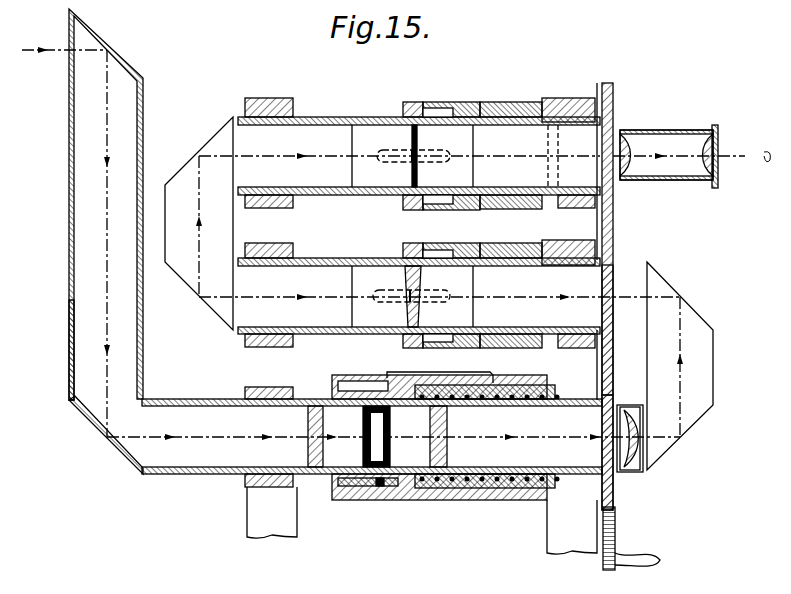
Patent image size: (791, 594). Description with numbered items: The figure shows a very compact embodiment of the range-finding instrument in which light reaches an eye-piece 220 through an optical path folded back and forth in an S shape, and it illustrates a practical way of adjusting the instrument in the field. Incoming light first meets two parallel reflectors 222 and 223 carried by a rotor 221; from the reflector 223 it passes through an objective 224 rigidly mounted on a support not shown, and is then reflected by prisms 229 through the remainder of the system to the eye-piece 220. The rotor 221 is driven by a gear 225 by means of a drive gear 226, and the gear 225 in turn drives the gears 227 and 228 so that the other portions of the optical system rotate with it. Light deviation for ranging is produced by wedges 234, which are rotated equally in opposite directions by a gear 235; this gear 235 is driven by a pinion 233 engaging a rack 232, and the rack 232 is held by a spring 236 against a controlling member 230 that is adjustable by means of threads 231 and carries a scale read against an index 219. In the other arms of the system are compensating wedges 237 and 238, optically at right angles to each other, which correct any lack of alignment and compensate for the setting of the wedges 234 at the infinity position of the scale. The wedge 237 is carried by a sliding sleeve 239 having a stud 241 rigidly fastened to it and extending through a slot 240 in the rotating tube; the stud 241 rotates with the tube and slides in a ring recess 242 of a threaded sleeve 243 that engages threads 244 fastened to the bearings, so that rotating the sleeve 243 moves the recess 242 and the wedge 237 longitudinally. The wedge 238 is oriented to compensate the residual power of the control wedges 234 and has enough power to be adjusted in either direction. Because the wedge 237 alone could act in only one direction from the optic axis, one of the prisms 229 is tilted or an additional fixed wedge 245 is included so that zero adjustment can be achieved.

The index 219 is at (460, 375).
The eye-piece 220 is at (662, 130).
The rotor 221 is at (190, 474).
The reflector 222 is at (108, 52).
The reflector 223 is at (80, 411).
The objective 224 is at (640, 456).
The gear 225 is at (613, 496).
The drive gear 226 is at (615, 534).
The gear 227 is at (613, 350).
The gear 228 is at (613, 211).
The prism 229 is at (182, 178).
The controlling member 230 is at (405, 500).
The threads 231 is at (458, 496).
The rack 232 is at (345, 486).
The pinion 233 is at (378, 482).
The wedge 234 is at (305, 452).
The gear 235 is at (381, 441).
The spring 236 is at (505, 481).
The wedge 237 is at (418, 175).
The wedge 238 is at (408, 311).
The sliding sleeve 239 is at (476, 190).
The slot 240 is at (394, 160).
The stud 241 is at (412, 152).
The ring recess 242 is at (413, 112).
The threaded sleeve 243 is at (423, 105).
The threads 244 is at (520, 110).
The fixed wedge 245 is at (559, 140).